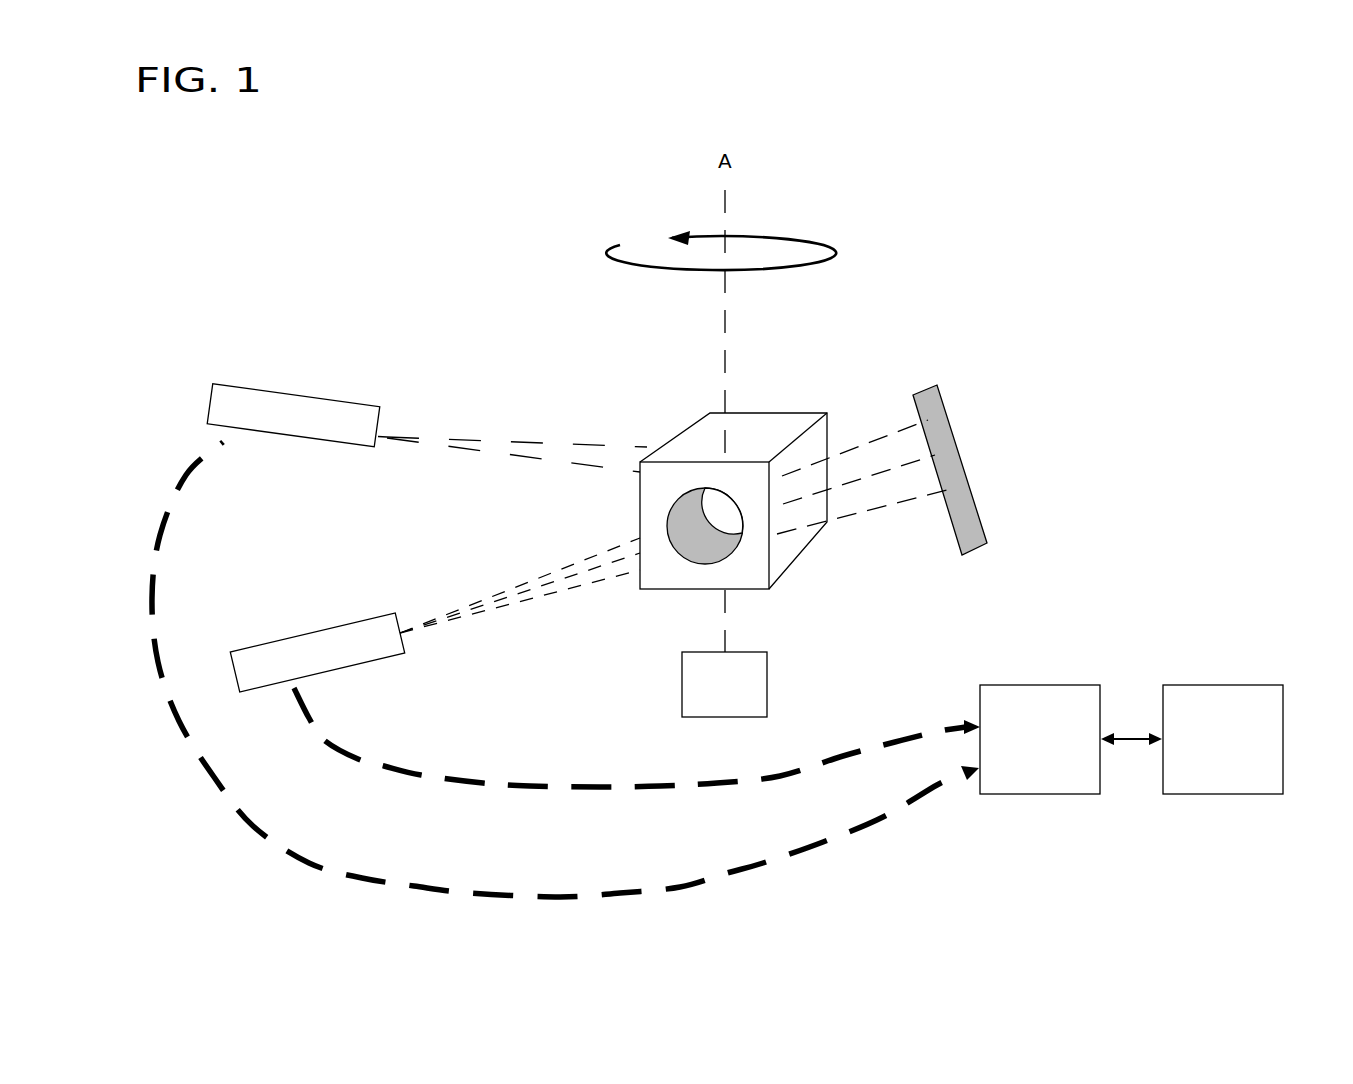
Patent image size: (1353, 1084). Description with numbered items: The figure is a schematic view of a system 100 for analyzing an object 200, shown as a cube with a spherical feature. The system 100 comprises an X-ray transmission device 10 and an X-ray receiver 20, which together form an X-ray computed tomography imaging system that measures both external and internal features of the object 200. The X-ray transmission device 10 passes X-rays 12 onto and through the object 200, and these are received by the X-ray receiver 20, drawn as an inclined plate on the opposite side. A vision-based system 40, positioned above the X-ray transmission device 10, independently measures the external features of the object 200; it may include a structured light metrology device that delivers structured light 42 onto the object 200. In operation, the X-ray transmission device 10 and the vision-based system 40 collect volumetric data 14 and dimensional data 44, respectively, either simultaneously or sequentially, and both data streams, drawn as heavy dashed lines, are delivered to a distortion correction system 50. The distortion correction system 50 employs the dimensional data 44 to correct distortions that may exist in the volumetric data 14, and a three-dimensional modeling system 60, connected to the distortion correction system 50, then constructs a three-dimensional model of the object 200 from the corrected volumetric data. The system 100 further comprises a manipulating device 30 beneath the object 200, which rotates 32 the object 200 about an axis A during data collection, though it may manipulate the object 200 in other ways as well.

The system 100 is at (384, 240).
The rotation 32 is at (797, 237).
The object 200 is at (797, 393).
The X-ray receiver 20 is at (957, 507).
The vision-based system 40 is at (293, 415).
The structured light 42 is at (515, 442).
The X-ray transmission device 10 is at (317, 652).
The X-rays 12 is at (530, 580).
The manipulating device 30 is at (738, 698).
The volumetric data 14 is at (527, 788).
The dimensional data 44 is at (390, 884).
The distortion correction system 50 is at (1054, 753).
The three-dimensional modeling system 60 is at (1238, 753).